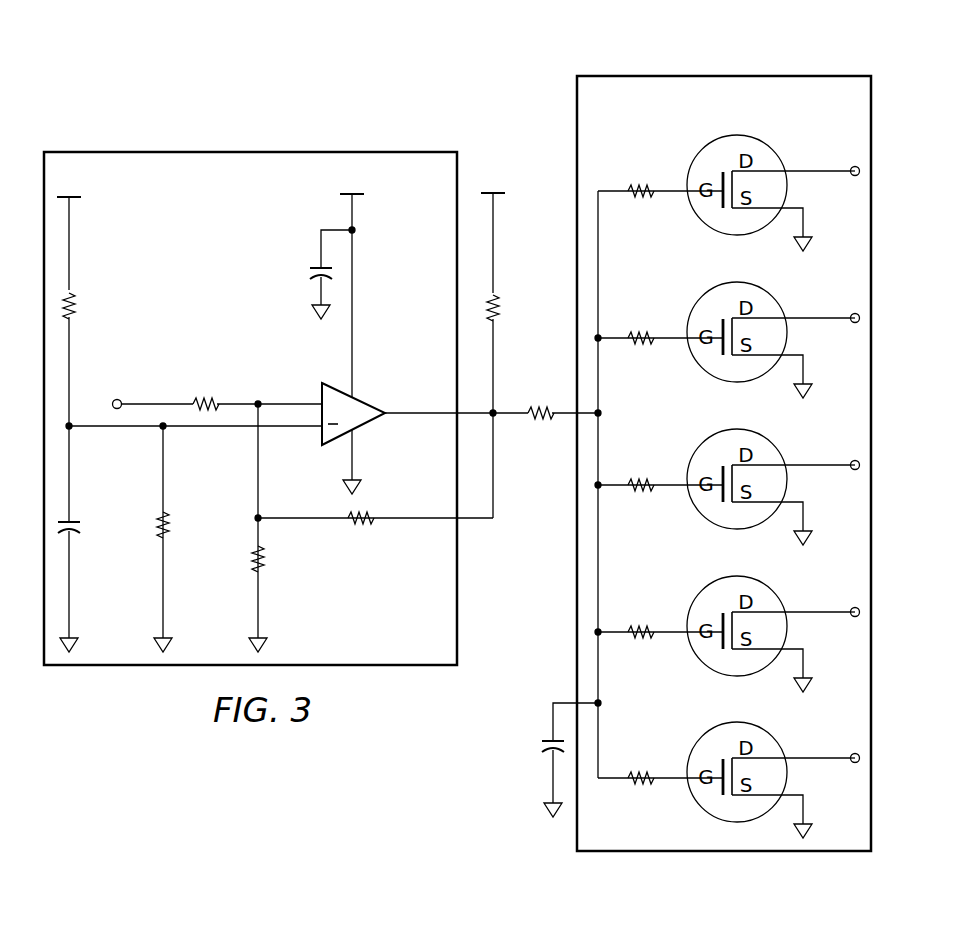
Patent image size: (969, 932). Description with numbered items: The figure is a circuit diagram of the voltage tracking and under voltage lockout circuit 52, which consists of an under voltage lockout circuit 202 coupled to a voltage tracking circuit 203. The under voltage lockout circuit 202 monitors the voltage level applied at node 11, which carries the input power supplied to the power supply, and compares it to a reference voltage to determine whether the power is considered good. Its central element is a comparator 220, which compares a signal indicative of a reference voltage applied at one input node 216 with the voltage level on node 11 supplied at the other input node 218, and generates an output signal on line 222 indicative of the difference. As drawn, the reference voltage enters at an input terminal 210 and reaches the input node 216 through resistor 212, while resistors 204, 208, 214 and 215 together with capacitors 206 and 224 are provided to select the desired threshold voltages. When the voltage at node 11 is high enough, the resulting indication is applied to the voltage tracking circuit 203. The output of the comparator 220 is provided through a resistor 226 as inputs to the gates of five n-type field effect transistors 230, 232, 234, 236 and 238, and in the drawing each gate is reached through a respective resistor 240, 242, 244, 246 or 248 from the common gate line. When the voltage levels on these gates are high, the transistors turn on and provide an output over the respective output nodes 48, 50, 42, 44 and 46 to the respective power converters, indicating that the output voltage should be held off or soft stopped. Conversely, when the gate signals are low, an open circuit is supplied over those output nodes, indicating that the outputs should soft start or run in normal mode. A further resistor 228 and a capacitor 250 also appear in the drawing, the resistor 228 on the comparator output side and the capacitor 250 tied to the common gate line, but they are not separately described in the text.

The node 11 is at (83, 207).
The output node 42 is at (815, 464).
The output node 44 is at (815, 611).
The output node 46 is at (815, 757).
The output node 48 is at (815, 170).
The output node 50 is at (815, 317).
The voltage tracking and under voltage lockout circuit 52 is at (415, 712).
The under voltage lockout circuit 202 is at (238, 152).
The voltage tracking circuit 203 is at (752, 74).
The resistor 204 is at (78, 309).
The capacitor 206 is at (84, 530).
The resistor 208 is at (172, 525).
The reference voltage input 210 is at (155, 402).
The resistor 212 is at (208, 398).
The resistor 214 is at (250, 562).
The resistor 215 is at (356, 528).
The input node 216 is at (283, 400).
The input node 218 is at (302, 428).
The comparator 220 is at (322, 390).
The line 222 is at (420, 410).
The capacitor 224 is at (310, 272).
The resistor 226 is at (540, 422).
The pull-up resistor 228 is at (503, 311).
The n-type field effect transistor 230 is at (700, 141).
The n-type field effect transistor 232 is at (700, 288).
The n-type field effect transistor 234 is at (700, 435).
The n-type field effect transistor 236 is at (700, 582).
The n-type field effect transistor 238 is at (700, 728).
The gate resistor 240 is at (640, 188).
The gate resistor 242 is at (640, 335).
The gate resistor 244 is at (640, 482).
The gate resistor 246 is at (640, 629).
The gate resistor 248 is at (640, 775).
The capacitor 250 is at (545, 746).